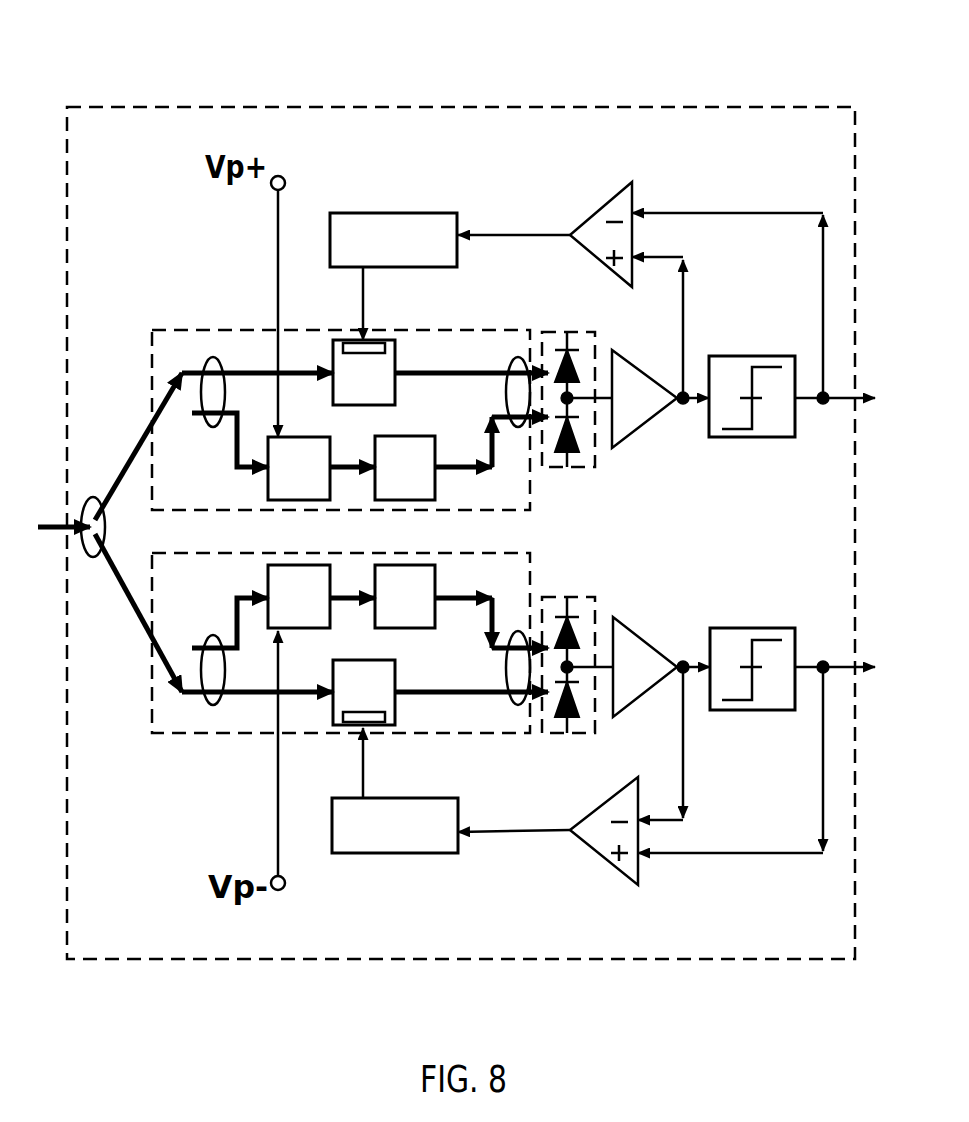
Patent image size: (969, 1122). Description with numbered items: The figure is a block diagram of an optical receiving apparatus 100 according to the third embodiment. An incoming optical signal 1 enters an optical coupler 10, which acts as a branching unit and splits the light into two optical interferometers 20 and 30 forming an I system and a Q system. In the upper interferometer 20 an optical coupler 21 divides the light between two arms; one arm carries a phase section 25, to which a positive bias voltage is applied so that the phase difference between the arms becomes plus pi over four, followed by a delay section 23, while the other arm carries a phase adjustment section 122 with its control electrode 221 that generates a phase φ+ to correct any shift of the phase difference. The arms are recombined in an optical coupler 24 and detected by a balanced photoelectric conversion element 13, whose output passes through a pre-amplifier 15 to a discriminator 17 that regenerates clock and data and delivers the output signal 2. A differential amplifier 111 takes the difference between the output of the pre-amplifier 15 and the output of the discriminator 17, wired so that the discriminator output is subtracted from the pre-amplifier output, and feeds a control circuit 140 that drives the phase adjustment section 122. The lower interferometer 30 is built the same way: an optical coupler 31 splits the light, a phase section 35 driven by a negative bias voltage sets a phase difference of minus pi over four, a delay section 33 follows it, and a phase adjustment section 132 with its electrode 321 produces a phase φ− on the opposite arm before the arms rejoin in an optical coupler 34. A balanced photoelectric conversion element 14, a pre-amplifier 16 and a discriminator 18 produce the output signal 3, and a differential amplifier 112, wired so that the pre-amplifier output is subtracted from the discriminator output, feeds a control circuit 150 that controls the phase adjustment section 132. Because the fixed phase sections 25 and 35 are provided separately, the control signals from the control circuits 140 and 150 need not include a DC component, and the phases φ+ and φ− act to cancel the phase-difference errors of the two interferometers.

The optical receiving apparatus 100 is at (655, 108).
The input optical signal 1 is at (42, 530).
The optical coupler (branching unit) 10 is at (85, 508).
The optical interferometer 20 is at (152, 393).
The optical coupler 21 is at (210, 357).
The phase section 25 is at (266, 435).
The delay section 23 is at (458, 420).
The phase adjustment section 122 is at (333, 345).
The first phase modulator control electrode 221 is at (385, 343).
The optical coupler 24 is at (518, 362).
The balanced photoelectric conversion element 13 is at (595, 465).
The pre-amplifier 15 is at (655, 425).
The discriminator (clock and data regenerator) 17 is at (765, 437).
The first output signal 2 is at (858, 398).
The first differential amplifier 111 is at (612, 198).
The control circuit 140 is at (330, 218).
The optical interferometer 30 is at (152, 725).
The optical coupler 31 is at (211, 706).
The phase section 35 is at (265, 632).
The delay section 33 is at (437, 612).
The phase adjustment section 132 is at (333, 716).
The second phase modulator control electrode 321 is at (385, 727).
The optical coupler 34 is at (530, 700).
The balanced photoelectric conversion element 14 is at (597, 612).
The pre-amplifier 16 is at (660, 620).
The discriminator (clock and data regenerator) 18 is at (760, 628).
The second output signal 3 is at (870, 672).
The second differential amplifier 112 is at (632, 880).
The control circuit 150 is at (385, 855).